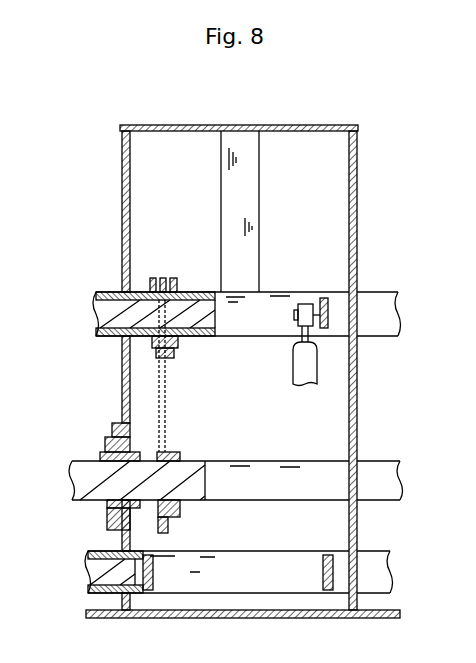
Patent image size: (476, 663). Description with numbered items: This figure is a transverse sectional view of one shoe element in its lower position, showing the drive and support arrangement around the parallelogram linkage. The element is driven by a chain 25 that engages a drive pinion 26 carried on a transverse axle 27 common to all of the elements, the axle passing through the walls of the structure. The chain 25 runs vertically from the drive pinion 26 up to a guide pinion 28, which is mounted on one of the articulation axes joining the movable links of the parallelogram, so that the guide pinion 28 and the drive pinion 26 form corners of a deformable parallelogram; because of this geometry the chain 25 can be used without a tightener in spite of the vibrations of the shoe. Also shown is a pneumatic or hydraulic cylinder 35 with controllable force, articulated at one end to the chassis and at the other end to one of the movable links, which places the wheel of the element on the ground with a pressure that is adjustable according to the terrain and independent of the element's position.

The chain 25 is at (168, 382).
The pinion 26 is at (172, 456).
The transverse axle 27 is at (382, 464).
The guide pinion 28 is at (174, 286).
The pneumatic or hydraulic cylinder 35 is at (301, 370).